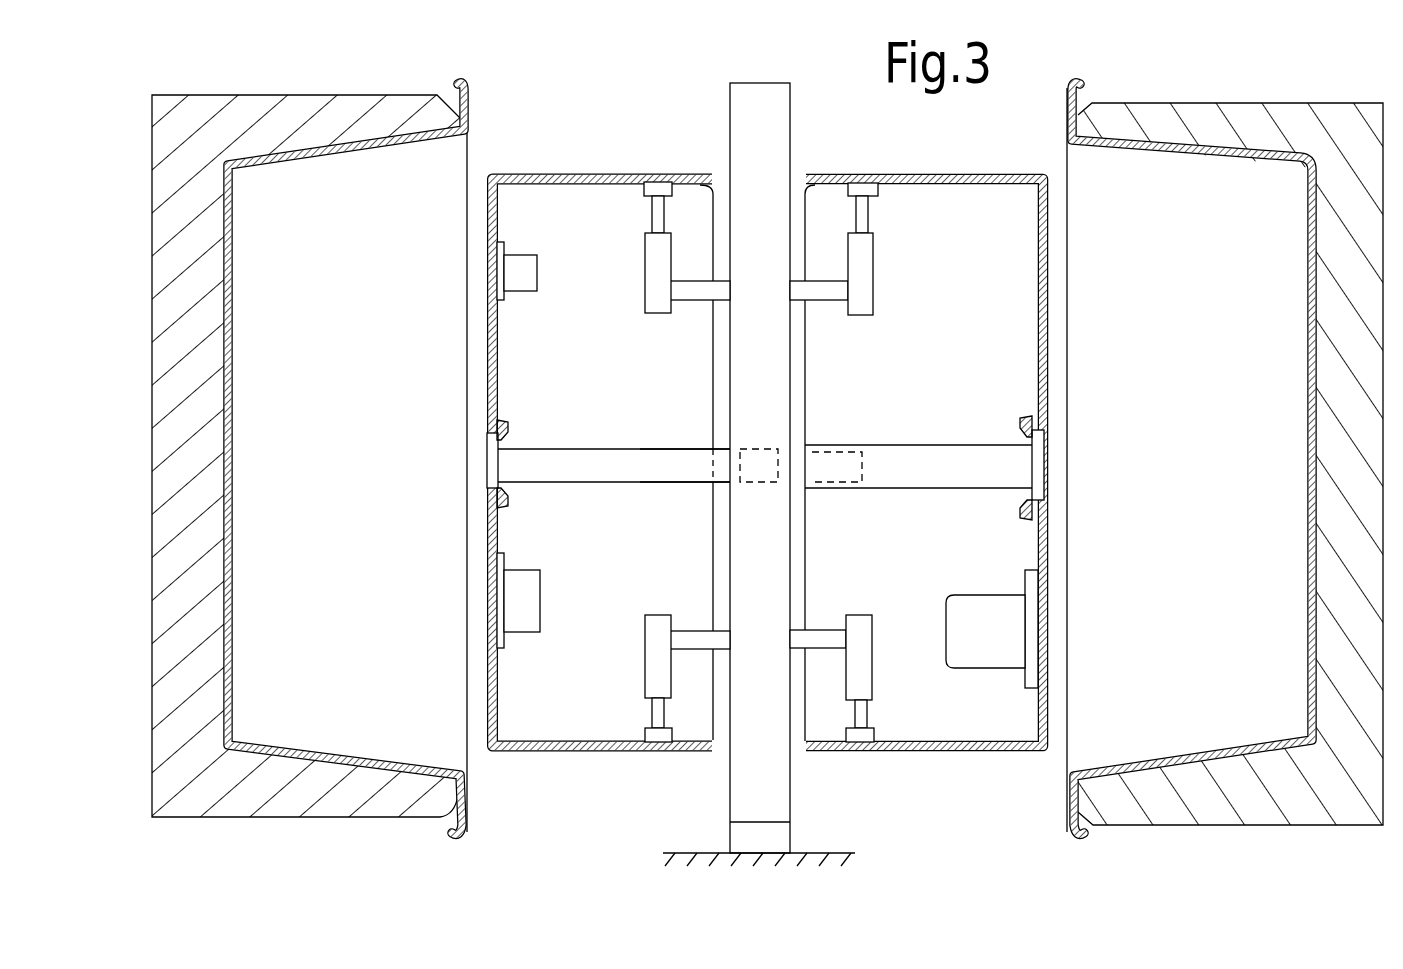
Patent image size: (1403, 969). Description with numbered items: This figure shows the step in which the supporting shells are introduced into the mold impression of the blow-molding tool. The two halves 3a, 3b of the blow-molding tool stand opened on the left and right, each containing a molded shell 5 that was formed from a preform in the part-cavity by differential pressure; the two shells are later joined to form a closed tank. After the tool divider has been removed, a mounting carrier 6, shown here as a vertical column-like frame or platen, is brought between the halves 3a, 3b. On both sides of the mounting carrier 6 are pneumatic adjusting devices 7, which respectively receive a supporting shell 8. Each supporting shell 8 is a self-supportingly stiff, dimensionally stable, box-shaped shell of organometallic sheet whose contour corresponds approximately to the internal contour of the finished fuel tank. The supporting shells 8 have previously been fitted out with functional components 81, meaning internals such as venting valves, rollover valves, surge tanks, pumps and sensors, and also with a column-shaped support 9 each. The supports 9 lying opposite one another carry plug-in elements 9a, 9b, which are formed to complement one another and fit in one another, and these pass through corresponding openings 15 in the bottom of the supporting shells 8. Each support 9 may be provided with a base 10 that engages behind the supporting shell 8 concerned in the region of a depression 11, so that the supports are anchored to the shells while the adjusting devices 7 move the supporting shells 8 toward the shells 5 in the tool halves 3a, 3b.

The half of blow-molding tool 3a is at (267, 107).
The half of blow-molding tool 3b is at (1243, 113).
The shell 5 is at (343, 160).
The mounting carrier 6 is at (765, 153).
The pneumatic adjusting device 7 is at (652, 271).
The supporting shell 8 is at (592, 170).
The column-shaped support 9 is at (582, 462).
The plug-in element 9a is at (698, 468).
The plug-in element 9b is at (822, 475).
The contact plate 10 is at (490, 477).
The depression 11 is at (490, 503).
The opening 15 is at (484, 451).
The functional component 81 is at (523, 276).